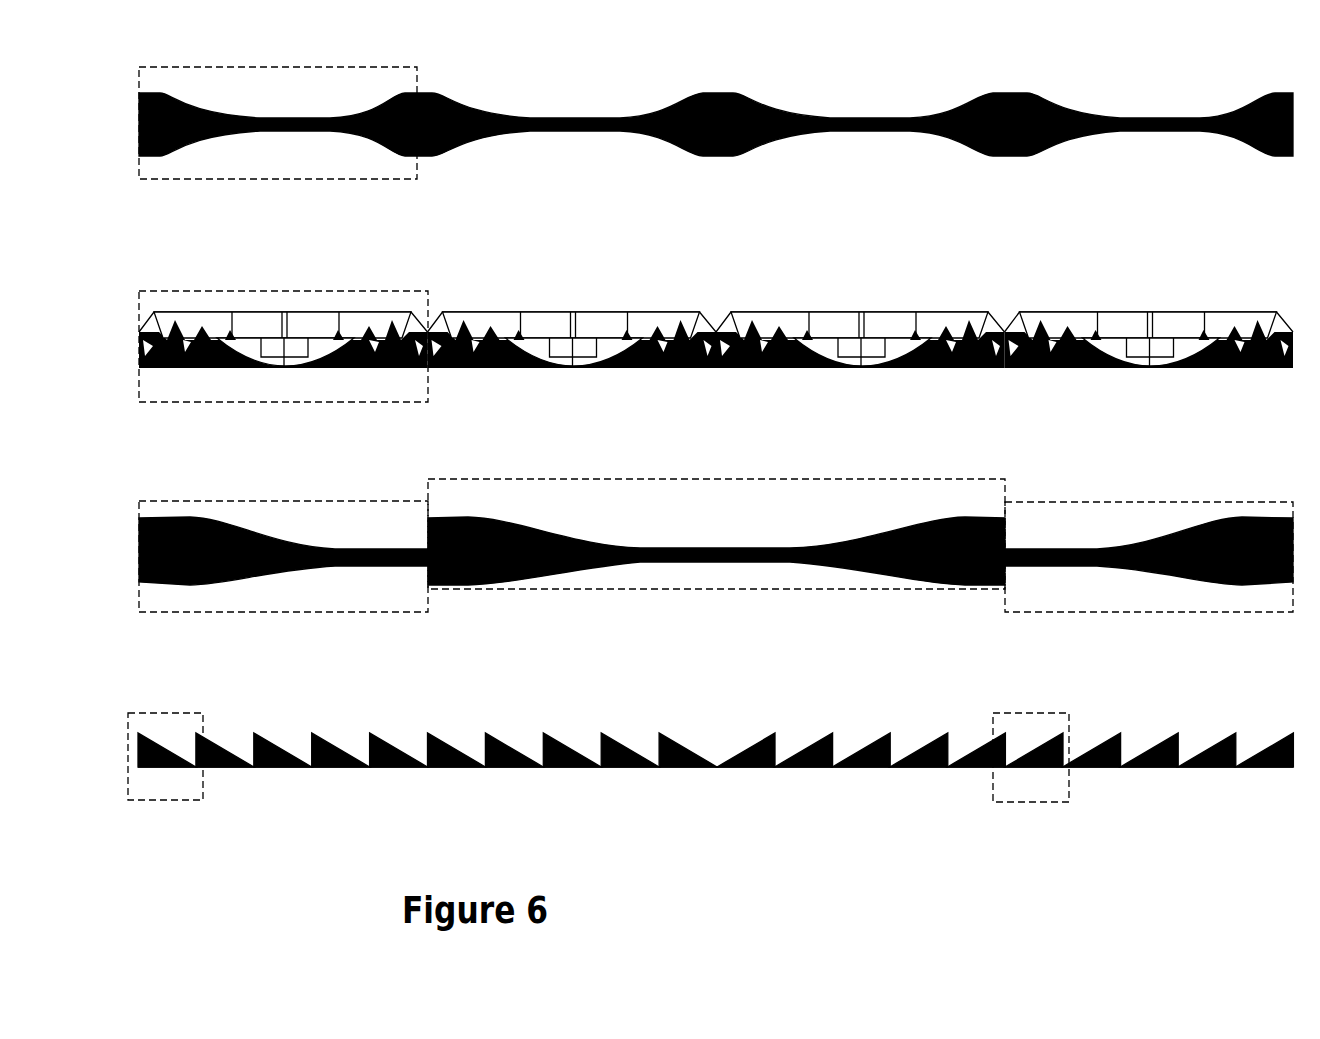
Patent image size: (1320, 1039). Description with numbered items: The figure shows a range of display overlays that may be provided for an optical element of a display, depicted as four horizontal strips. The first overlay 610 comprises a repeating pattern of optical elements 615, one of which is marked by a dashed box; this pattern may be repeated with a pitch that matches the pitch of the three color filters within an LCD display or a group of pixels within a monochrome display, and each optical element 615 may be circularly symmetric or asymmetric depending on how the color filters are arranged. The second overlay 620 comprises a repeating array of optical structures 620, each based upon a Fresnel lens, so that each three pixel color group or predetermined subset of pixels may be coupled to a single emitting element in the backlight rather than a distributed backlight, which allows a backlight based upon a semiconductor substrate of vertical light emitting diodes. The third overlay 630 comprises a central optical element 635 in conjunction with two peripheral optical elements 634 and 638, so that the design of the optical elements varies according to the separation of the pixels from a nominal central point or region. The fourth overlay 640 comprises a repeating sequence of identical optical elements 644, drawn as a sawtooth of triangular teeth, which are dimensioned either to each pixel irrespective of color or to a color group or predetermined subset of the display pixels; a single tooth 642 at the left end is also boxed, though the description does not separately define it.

The first overlay 610 is at (713, 120).
The optical element 615 is at (275, 103).
The second overlay 620 is at (713, 347).
The third overlay 630 is at (713, 573).
The peripheral optical element 634 is at (280, 584).
The central optical element 635 is at (716, 534).
The peripheral optical element 638 is at (1149, 584).
The fourth overlay 640 is at (710, 784).
The left sawtooth tooth 642 is at (165, 784).
The optical element 644 is at (1031, 784).